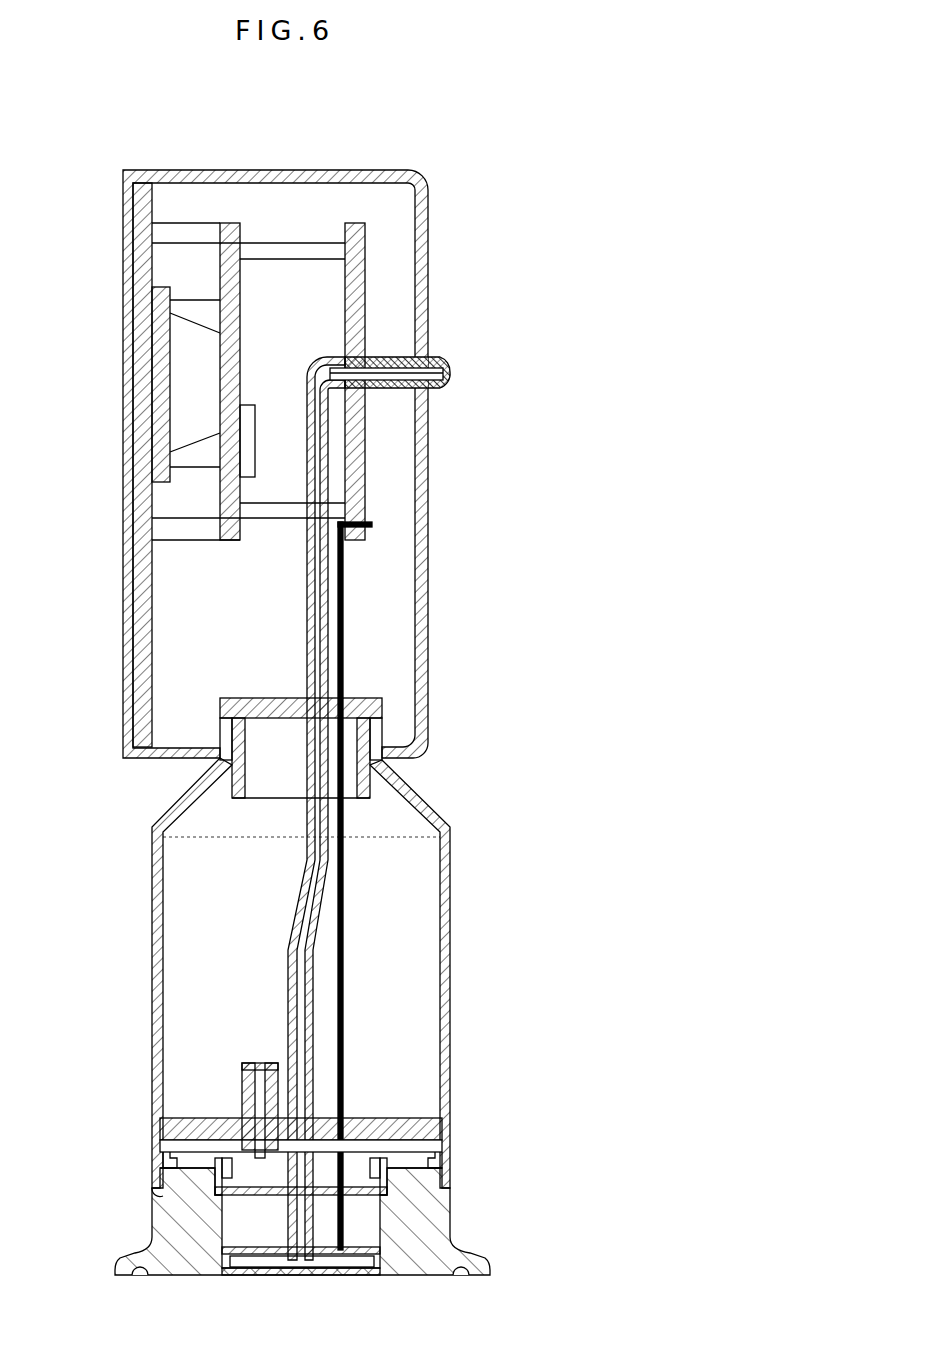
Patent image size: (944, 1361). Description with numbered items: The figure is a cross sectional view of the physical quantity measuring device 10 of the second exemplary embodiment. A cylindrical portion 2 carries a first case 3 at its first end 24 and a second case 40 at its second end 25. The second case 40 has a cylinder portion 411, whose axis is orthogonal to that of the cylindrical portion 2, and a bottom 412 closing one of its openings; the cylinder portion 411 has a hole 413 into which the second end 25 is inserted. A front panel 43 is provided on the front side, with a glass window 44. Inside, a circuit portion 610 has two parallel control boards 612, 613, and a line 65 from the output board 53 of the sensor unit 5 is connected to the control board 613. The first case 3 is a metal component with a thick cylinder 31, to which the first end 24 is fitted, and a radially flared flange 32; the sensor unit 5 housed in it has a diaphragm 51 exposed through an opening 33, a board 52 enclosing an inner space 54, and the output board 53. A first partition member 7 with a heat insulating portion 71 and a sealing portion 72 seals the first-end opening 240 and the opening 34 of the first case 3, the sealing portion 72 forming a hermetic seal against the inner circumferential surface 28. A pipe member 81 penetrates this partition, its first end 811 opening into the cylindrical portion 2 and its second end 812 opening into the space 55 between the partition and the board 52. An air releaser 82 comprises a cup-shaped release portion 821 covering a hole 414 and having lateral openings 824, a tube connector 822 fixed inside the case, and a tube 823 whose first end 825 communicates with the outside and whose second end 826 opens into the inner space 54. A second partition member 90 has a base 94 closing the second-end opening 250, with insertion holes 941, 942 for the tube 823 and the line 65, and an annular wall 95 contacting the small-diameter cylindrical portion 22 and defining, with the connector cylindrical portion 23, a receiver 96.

The physical quantity measuring device 10 is at (548, 147).
The second case 40 is at (432, 176).
The cylinder portion 411 is at (382, 172).
The bottom 412 is at (424, 253).
The hole 414 is at (410, 352).
The front panel 43 is at (140, 218).
The glass window 44 is at (148, 356).
The circuit portion 610 is at (258, 328).
The control board 612 is at (230, 230).
The control board 613 is at (355, 230).
The air releaser 82 is at (288, 770).
The tube connector 822 is at (383, 353).
The tube 823 is at (297, 908).
The first end of the tube 825 is at (325, 410).
The release portion 821 is at (450, 357).
The openings 824 is at (430, 393).
The line 65 is at (345, 583).
The second partition member 90 is at (345, 708).
The base 94 is at (224, 698).
The insertion hole 941 is at (238, 718).
The insertion hole 942 is at (362, 718).
The annular wall 95 is at (250, 745).
The second-end opening 250 is at (365, 698).
The small-diameter cylindrical portion 22 is at (383, 733).
The connector cylindrical portion 23 is at (418, 800).
The second end 25 is at (220, 732).
The hole 413 is at (243, 760).
The receiver 96 is at (216, 804).
The cylindrical portion 2 is at (288, 954).
The inner circumferential surface 28 is at (160, 990).
The first partition member 7 is at (355, 1120).
The sealing portion 72 is at (428, 1128).
The heat insulating portion 71 is at (430, 1145).
The pipe member 81 is at (173, 1091).
The first end of the pipe member 811 is at (243, 1067).
The second end of the pipe member 812 is at (215, 1150).
The opening 34 is at (163, 1152).
The first end 24 is at (165, 1168).
The first-end opening 240 is at (167, 1202).
The first case 3 is at (326, 1229).
The cylinder 31 is at (422, 1233).
The flange 32 is at (482, 1257).
The opening 33 is at (372, 1272).
The second end of the tube 826 is at (240, 1213).
The sensor unit 5 is at (300, 1263).
The space 55 is at (228, 1228).
The inner space 54 is at (262, 1262).
The board 52 is at (272, 1262).
The diaphragm 51 is at (315, 1275).
The output board 53 is at (366, 1235).